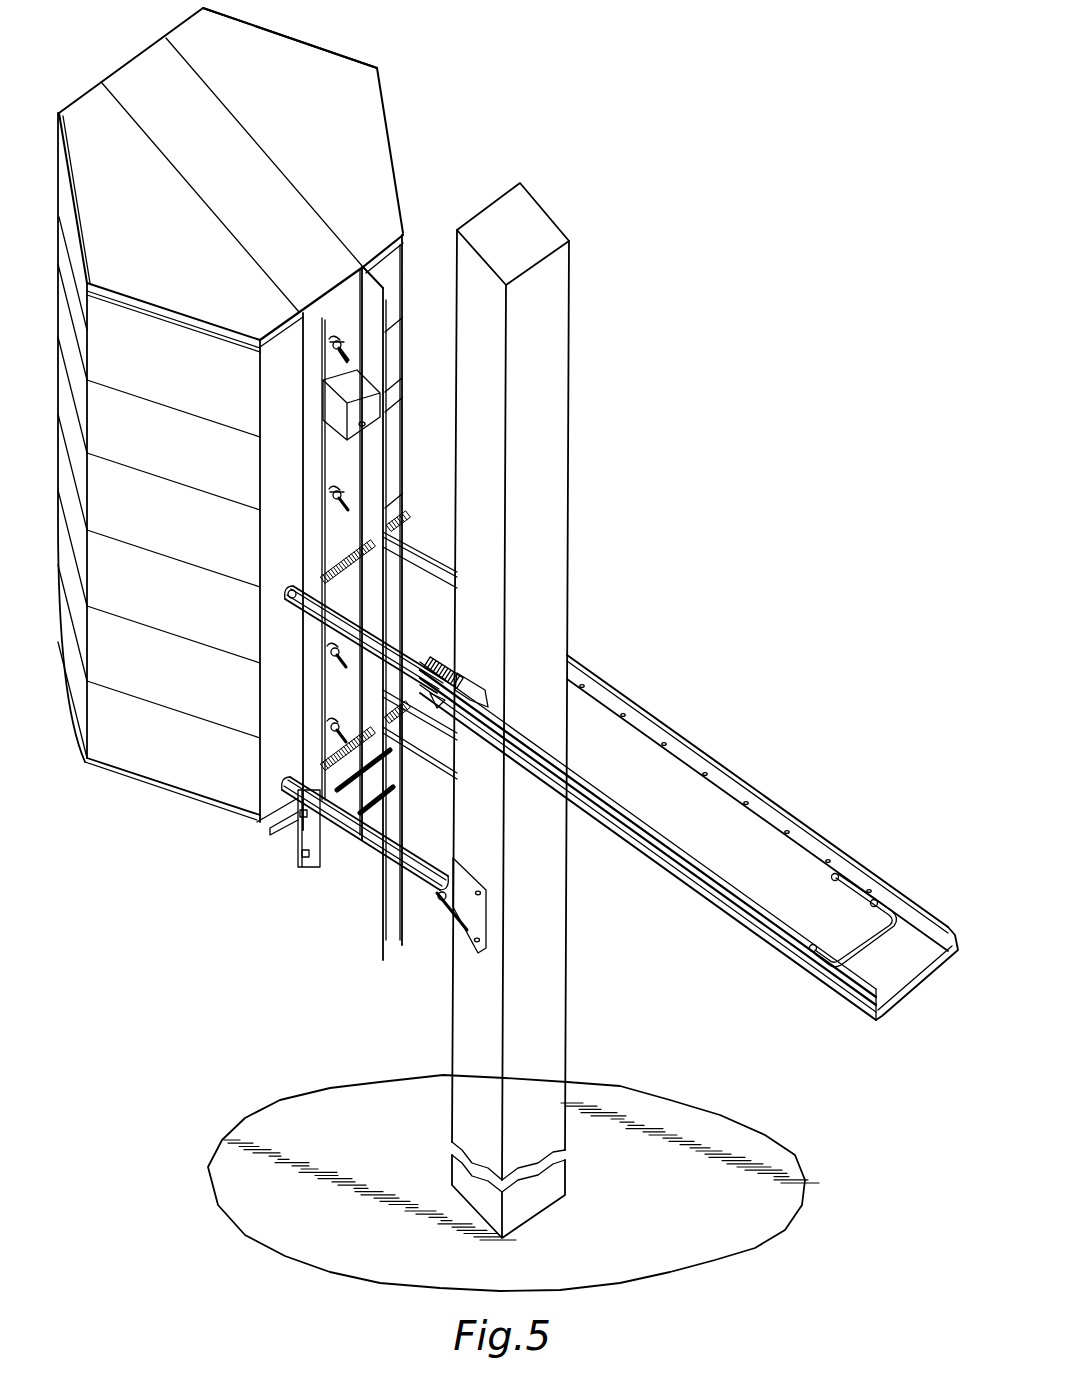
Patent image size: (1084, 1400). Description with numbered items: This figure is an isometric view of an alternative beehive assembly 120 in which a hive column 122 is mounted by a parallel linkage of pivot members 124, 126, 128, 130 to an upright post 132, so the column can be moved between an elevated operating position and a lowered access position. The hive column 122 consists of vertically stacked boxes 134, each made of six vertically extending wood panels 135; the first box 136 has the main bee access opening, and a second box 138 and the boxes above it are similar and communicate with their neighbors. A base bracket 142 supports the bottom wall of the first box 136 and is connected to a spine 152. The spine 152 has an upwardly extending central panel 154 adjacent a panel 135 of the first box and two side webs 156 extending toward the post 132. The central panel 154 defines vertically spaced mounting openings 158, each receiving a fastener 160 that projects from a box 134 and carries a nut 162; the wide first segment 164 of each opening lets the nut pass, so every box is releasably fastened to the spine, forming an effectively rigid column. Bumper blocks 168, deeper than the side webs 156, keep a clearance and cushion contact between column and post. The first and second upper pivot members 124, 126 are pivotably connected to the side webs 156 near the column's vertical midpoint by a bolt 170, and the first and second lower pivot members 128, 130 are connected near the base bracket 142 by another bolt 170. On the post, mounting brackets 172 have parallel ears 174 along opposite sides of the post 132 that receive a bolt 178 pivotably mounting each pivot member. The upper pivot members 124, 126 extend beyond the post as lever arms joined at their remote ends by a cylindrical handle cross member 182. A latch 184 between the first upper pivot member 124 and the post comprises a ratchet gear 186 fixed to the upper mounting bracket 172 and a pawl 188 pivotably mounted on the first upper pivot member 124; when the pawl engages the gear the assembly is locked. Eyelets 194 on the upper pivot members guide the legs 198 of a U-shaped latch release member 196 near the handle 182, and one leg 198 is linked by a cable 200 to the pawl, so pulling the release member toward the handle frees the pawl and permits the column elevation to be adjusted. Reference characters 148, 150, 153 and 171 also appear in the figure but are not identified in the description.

The beehive assembly 120 is at (439, 224).
The hive column 122 is at (384, 106).
The first upper pivot member 124 is at (728, 915).
The second upper pivot member 126 is at (748, 783).
The first lower pivot member 128 is at (367, 850).
The second lower pivot member 130 is at (427, 778).
The upright post 132 is at (566, 1005).
The hive boxes 134 is at (70, 718).
The wood panels 135 is at (261, 761).
The first box 136 is at (152, 792).
The second box 138 is at (157, 686).
The base bracket 142 is at (278, 824).
The mounting plate 148 is at (298, 842).
The plate bolts 150 is at (303, 866).
The spine 152 is at (386, 300).
The roof ridge edge 153 is at (290, 40).
The central panel 154 is at (323, 469).
The side webs 156 is at (388, 430).
The mounting openings 158 is at (338, 344).
The fastener 160 is at (347, 340).
The nut 162 is at (330, 360).
The first segment 164 is at (333, 488).
The bumper blocks 168 is at (362, 392).
The bolt 170 is at (295, 598).
The ground 171 is at (733, 1253).
The mounting bracket 172 is at (462, 932).
The ears 174 is at (468, 860).
The bolt 178 is at (438, 898).
The handle cross member 182 is at (916, 992).
The latch 184 is at (480, 674).
The ratchet gear 186 is at (430, 660).
The pawl 188 is at (467, 675).
The eyelets 194 is at (870, 904).
The latch release member 196 is at (866, 946).
The legs 198 is at (831, 878).
The cable 200 is at (655, 832).